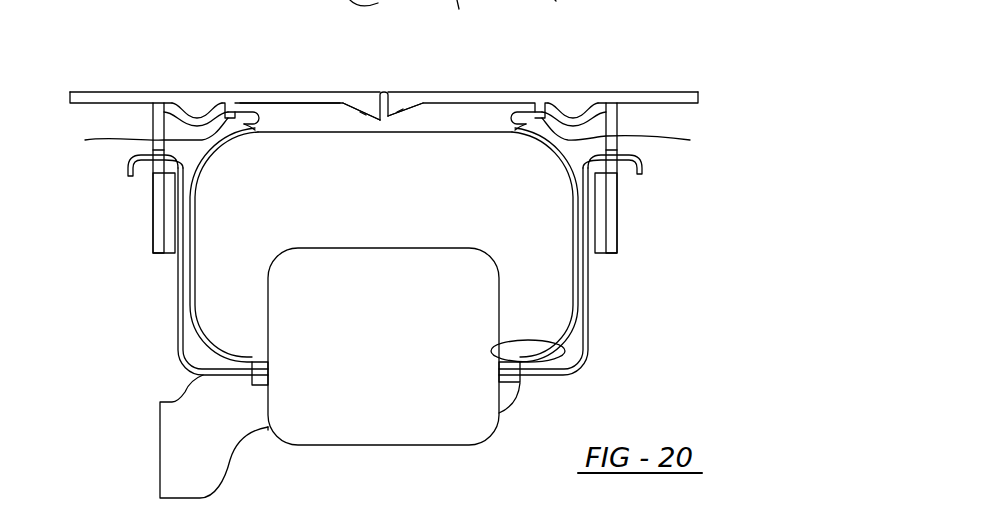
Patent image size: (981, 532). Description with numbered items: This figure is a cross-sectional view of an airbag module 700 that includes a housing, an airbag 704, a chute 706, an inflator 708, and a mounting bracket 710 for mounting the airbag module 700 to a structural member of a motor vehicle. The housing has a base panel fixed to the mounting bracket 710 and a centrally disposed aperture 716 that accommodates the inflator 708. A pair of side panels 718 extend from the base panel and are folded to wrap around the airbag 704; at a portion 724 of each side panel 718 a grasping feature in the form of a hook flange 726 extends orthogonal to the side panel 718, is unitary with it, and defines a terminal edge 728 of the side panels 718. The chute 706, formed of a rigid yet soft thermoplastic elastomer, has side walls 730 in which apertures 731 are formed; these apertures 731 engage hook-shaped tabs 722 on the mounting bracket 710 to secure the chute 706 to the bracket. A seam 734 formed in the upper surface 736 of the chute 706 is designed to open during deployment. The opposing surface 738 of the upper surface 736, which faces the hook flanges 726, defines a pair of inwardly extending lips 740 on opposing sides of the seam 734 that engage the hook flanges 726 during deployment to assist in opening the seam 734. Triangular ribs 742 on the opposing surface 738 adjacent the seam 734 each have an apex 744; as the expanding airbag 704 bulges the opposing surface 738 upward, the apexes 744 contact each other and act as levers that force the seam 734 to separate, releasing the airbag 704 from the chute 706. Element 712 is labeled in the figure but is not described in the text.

The airbag module 700 is at (462, 453).
The airbag 704 is at (368, 217).
The chute 706 is at (631, 91).
The inflator 708 is at (358, 368).
The mounting bracket 710 is at (180, 469).
The cover 712 is at (566, 4).
The aperture 716 is at (560, 347).
The side panel 718 is at (462, 17).
The hook-shaped tab 722 is at (128, 160).
The portion 724 is at (262, 118).
The hook flange 726 is at (298, 97).
The terminal edge 728 is at (258, 117).
The side wall 730 is at (158, 228).
The aperture 731 is at (152, 183).
The seam 734 is at (390, 91).
The upper surface 736 is at (128, 90).
The opposing surface 738 is at (322, 103).
The lip 740 is at (388, 135).
The rib 742 is at (360, 112).
The apex 744 is at (380, 118).